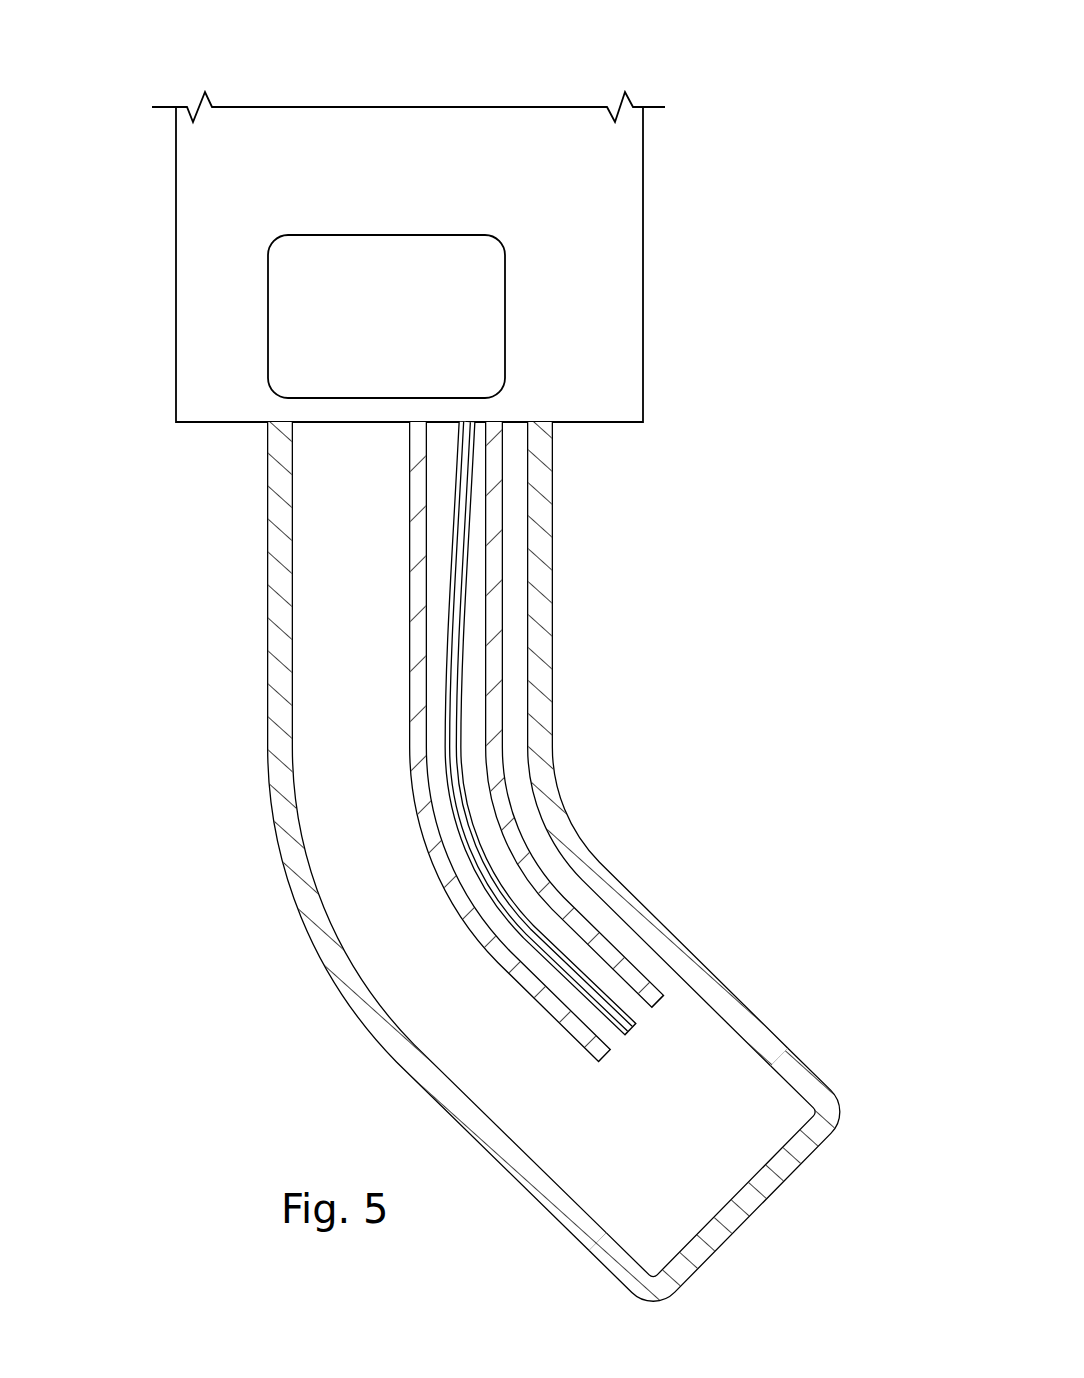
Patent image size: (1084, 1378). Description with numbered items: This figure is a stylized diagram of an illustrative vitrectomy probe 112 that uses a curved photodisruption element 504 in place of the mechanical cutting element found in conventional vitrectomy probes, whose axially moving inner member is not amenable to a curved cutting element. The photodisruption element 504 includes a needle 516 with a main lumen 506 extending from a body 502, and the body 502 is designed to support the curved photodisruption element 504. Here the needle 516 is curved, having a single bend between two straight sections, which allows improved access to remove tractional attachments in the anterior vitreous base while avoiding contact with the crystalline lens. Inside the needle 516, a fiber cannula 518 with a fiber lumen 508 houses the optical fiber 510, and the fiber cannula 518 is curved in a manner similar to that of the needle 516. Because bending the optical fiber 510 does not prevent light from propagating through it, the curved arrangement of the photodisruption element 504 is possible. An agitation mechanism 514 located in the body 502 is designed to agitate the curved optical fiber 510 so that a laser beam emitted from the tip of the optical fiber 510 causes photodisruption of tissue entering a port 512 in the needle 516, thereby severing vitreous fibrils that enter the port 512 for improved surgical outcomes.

The vitrectomy probe 112 is at (125, 60).
The body 502 is at (690, 276).
The photodisruption element 504 is at (661, 694).
The main lumen 506 is at (308, 503).
The fiber lumen 508 is at (442, 545).
The optical fiber 510 is at (447, 588).
The port 512 is at (791, 1003).
The agitation mechanism 514 is at (409, 335).
The needle 516 is at (614, 853).
The fiber cannula 518 is at (408, 702).